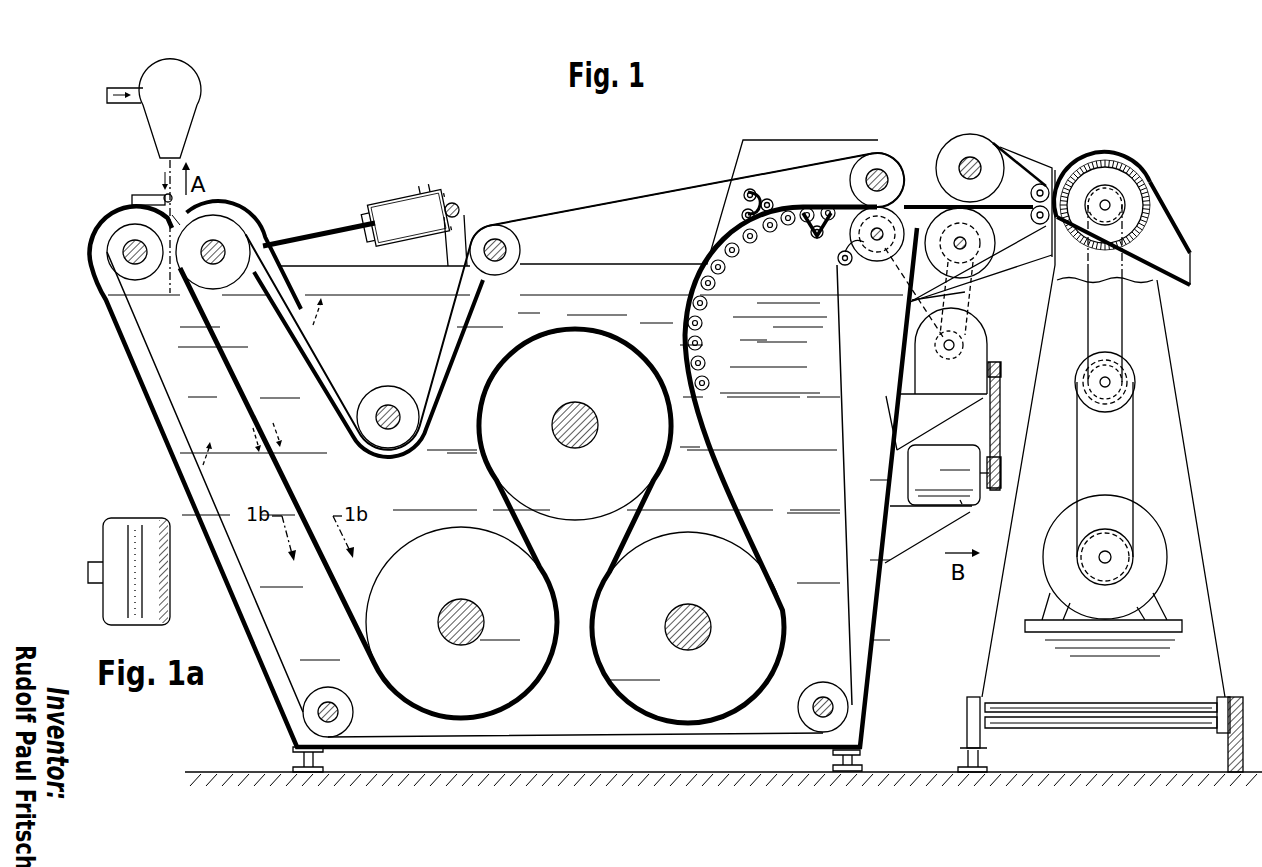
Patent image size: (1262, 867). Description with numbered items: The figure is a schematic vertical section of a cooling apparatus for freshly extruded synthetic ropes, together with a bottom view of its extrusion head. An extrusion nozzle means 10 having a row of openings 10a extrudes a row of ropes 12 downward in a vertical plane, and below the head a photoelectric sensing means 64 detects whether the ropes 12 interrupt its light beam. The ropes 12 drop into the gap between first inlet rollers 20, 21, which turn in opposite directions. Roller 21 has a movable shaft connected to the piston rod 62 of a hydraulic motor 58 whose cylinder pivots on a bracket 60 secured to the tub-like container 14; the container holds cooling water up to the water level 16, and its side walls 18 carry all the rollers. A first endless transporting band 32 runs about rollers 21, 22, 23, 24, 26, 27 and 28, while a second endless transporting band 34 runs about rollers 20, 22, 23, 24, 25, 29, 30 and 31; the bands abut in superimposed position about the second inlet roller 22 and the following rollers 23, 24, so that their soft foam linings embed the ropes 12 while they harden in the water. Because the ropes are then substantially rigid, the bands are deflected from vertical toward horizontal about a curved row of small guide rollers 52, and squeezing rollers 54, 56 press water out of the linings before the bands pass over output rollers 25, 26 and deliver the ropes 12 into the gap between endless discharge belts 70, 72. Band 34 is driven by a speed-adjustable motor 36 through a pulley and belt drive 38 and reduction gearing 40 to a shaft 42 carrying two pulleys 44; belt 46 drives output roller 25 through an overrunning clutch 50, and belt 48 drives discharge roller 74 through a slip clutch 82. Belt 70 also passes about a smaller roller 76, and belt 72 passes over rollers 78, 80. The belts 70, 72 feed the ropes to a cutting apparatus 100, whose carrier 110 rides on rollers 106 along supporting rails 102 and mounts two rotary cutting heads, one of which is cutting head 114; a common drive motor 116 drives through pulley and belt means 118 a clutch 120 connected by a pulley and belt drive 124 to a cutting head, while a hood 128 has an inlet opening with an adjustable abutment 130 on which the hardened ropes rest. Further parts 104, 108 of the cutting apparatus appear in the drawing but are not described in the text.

In FIG. 1, the extrusion nozzle means 10 is at (199, 98).
In FIG. 1A, the extrusion nozzle means 10 is at (172, 573).
In FIG. 1A, the row of openings 10a is at (142, 527).
In FIG. 1, the extruded ropes 12 is at (183, 217).
In FIG. 1, the tub-like container 14 is at (253, 680).
In FIG. 1, the water level 16 is at (594, 292).
In FIG. 1, the side walls 18 is at (669, 265).
In FIG. 1, the first inlet roller 20 is at (147, 272).
In FIG. 1, the inlet roller 21 is at (222, 274).
In FIG. 1, the second inlet roller 22 is at (449, 581).
In FIG. 1, the roller 23 is at (562, 397).
In FIG. 1, the roller 24 is at (676, 582).
In FIG. 1, the output roller 25 is at (855, 236).
In FIG. 1, the output roller 26 is at (873, 160).
In FIG. 1, the roller 27 is at (521, 246).
In FIG. 1, the roller 28 is at (388, 386).
In FIG. 1, the roller 29 is at (850, 264).
In FIG. 1, the roller 30 is at (818, 687).
In FIG. 1, the roller 31 is at (333, 693).
In FIG. 1, the first endless transporting band 32 is at (638, 191).
In FIG. 1, the second endless transporting band 34 is at (165, 409).
In FIG. 1, the motor 36 is at (967, 484).
In FIG. 1, the pulley and belt drive 38 is at (987, 424).
In FIG. 1, the reduction gearing 40 is at (977, 348).
In FIG. 1, the shaft 42 is at (953, 352).
In FIG. 1, the pulleys 44 is at (976, 323).
In FIG. 1, the endless belt 46 is at (907, 330).
In FIG. 1, the endless belt 48 is at (968, 292).
In FIG. 1, the overrunning clutch 50 is at (893, 221).
In FIG. 1, the small guide rollers 52 is at (757, 252).
In FIG. 1, the squeezing roller 54 is at (766, 196).
In FIG. 1, the squeezing roller 56 is at (810, 228).
In FIG. 1, the hydraulic motor 58 is at (404, 183).
In FIG. 1, the bracket 60 is at (458, 206).
In FIG. 1, the piston rod 62 is at (317, 231).
In FIG. 1, the photoelectric sensing means 64 is at (162, 193).
In FIG. 1, the discharge belt 70 is at (1027, 257).
In FIG. 1, the discharge belt 72 is at (1027, 153).
In FIG. 1, the discharge roller 74 is at (980, 223).
In FIG. 1, the smaller roller 76 is at (1041, 230).
In FIG. 1, the roller 78 is at (977, 157).
In FIG. 1, the roller 80 is at (1025, 189).
In FIG. 1, the slip clutch 82 is at (980, 243).
In FIG. 1, the cutting apparatus 100 is at (1192, 203).
In FIG. 1, the supporting rails 102 is at (968, 750).
In FIG. 1, the support block 104 is at (1227, 752).
In FIG. 1, the rollers 106 is at (969, 696).
In FIG. 1, the bearing block 108 is at (1226, 697).
In FIG. 1, the carrier 110 is at (1180, 505).
In FIG. 1, the cutting head 114 is at (1105, 180).
In FIG. 1, the drive motor 116 is at (1070, 515).
In FIG. 1, the pulley and belt means 118 is at (1076, 450).
In FIG. 1, the clutch 120 is at (1077, 388).
In FIG. 1, the pulley and belt drive 124 is at (1087, 337).
In FIG. 1, the hood 128 is at (1152, 183).
In FIG. 1, the adjustable abutment 130 is at (1059, 192).